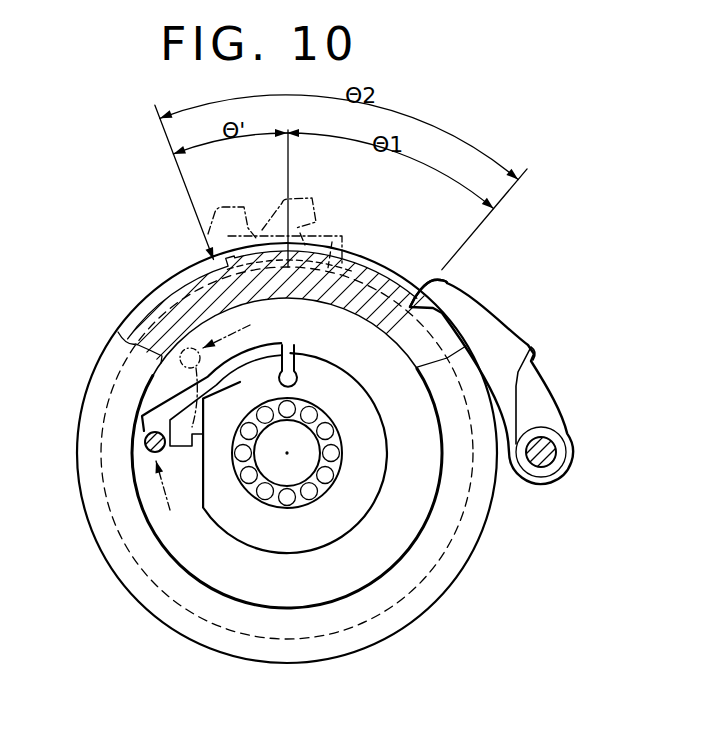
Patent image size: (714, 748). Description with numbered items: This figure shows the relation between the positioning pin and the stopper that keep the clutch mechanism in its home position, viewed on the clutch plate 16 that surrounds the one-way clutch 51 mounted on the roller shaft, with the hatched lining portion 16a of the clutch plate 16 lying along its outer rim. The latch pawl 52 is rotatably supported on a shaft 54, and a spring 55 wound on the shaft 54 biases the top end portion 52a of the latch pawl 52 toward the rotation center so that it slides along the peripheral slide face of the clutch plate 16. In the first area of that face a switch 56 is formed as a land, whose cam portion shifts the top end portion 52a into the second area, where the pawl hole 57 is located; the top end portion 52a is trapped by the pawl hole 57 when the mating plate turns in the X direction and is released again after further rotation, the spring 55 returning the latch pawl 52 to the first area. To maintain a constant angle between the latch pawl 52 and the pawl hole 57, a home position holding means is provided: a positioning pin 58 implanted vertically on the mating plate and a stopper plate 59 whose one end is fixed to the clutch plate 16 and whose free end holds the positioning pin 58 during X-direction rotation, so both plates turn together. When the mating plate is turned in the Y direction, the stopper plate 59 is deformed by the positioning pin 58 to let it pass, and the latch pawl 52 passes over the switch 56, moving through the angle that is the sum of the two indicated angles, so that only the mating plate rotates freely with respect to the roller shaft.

The clutch plate 16 is at (105, 540).
The brake shoe lining portion 16a is at (187, 293).
The one-way clutch 51 is at (337, 440).
The latch pawl 52 is at (473, 310).
The top end portion 52a is at (428, 290).
The shaft 54 is at (552, 447).
The spring 55 is at (527, 385).
The switch 56 is at (262, 250).
The pawl hole 57 is at (328, 266).
The positioning pin 58 is at (146, 443).
The stopper plate 59 is at (148, 418).